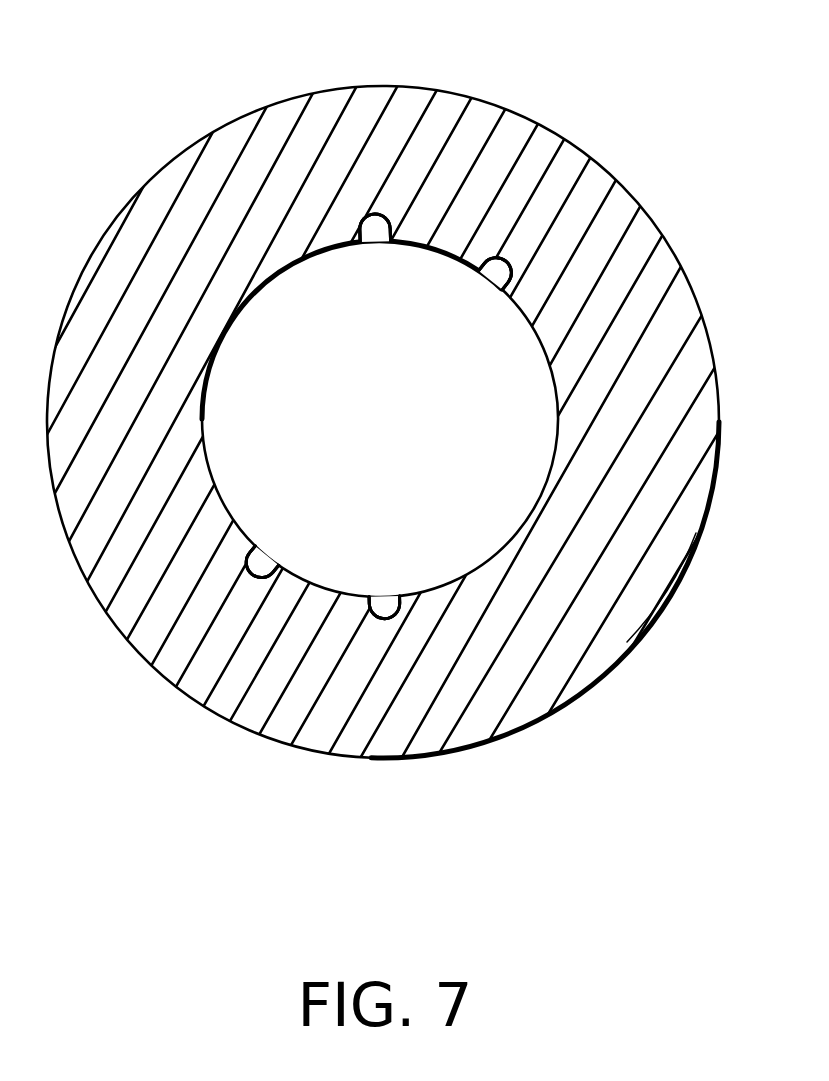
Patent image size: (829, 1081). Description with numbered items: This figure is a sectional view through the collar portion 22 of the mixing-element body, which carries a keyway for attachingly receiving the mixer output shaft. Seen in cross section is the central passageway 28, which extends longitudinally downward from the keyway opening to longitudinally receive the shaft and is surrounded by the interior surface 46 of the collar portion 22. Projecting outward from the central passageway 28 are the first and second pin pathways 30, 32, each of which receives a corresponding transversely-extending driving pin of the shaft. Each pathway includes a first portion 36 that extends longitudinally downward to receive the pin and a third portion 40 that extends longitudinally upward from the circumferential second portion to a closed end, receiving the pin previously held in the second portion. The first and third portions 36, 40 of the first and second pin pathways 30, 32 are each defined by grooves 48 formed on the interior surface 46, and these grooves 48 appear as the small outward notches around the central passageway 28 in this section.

The collar portion 22 is at (146, 82).
The central passageway 28 is at (532, 357).
The first pin pathway 30 is at (367, 232).
The second pin pathway 32 is at (265, 553).
The first portion 36 is at (386, 238).
The third portion 40 is at (500, 282).
The interior surface 46 is at (229, 324).
The grooves 48 is at (362, 213).